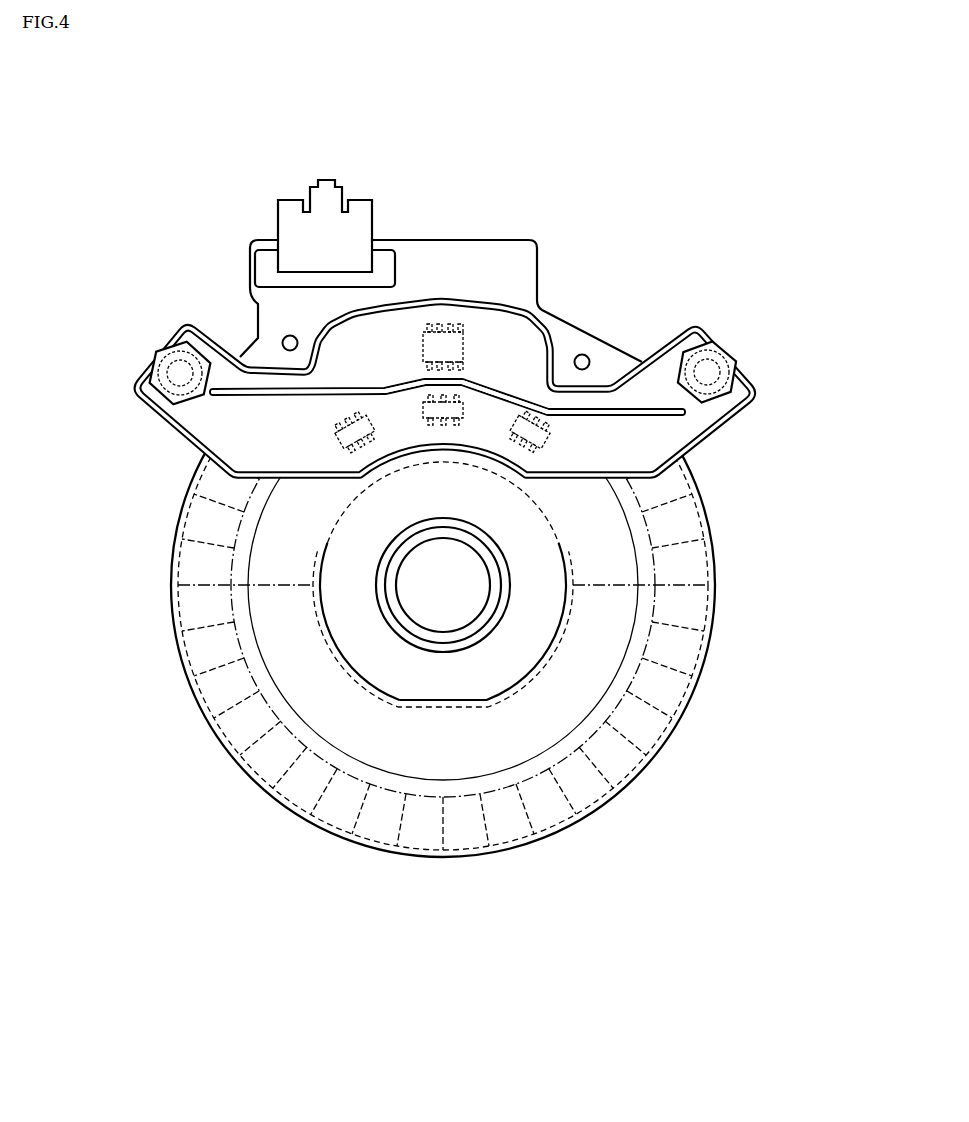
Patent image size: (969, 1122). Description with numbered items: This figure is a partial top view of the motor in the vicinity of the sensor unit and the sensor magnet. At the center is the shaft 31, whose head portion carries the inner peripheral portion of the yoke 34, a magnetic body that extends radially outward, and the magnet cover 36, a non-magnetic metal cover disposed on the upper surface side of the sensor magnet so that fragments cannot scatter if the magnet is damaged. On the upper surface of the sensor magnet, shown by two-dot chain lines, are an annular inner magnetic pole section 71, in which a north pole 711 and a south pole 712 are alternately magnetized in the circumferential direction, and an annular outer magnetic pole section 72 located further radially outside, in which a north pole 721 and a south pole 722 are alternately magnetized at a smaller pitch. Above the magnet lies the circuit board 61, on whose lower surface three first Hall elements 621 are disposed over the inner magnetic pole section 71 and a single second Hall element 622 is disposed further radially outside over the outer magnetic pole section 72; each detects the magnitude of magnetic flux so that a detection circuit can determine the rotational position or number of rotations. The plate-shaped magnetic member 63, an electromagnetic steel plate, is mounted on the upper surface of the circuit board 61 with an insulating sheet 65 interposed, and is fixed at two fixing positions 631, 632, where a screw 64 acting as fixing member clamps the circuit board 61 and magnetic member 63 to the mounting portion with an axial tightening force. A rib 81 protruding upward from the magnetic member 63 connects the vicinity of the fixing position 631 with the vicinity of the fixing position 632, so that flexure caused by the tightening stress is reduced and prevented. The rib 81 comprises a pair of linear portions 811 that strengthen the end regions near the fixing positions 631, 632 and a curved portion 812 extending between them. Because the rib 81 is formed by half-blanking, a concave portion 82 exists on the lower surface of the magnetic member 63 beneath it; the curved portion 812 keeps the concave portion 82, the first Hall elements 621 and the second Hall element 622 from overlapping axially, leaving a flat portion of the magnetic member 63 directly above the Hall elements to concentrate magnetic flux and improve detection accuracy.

The shaft 31 is at (460, 586).
The yoke 34 is at (487, 615).
The magnet cover 36 is at (360, 638).
The circuit board 61 is at (283, 313).
The magnetic member 63 is at (252, 447).
The screw 64 is at (177, 368).
The insulating sheet 65 is at (700, 436).
The rib 81 is at (580, 133).
The linear portions 811 is at (343, 389).
The curved portion 812 is at (502, 392).
The concave portion 82 is at (655, 405).
The first Hall elements 621 is at (370, 453).
The second Hall element 622 is at (443, 322).
The fixing position 631 is at (715, 388).
The fixing position 632 is at (174, 387).
The inner magnetic pole section 71 is at (650, 905).
The north pole 711 is at (467, 747).
The south pole 712 is at (570, 700).
The outer magnetic pole section 72 is at (360, 940).
The north pole 721 is at (305, 787).
The south pole 722 is at (340, 803).